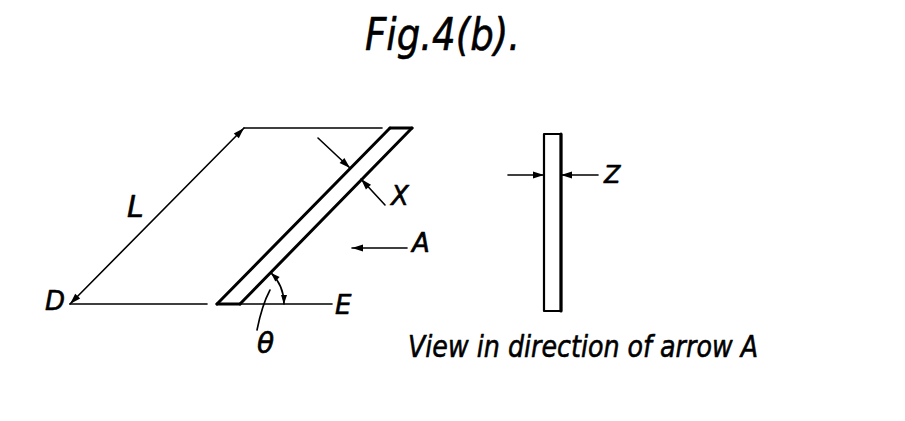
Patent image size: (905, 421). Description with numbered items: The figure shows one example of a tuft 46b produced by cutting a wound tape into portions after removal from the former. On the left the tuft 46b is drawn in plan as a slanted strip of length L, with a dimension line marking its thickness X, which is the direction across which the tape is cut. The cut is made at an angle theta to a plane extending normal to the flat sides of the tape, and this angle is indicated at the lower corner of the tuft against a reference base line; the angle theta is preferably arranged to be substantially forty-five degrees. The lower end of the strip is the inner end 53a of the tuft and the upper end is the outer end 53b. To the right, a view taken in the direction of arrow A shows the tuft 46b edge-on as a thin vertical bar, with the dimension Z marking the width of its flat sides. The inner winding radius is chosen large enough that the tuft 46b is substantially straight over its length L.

The tuft 46b is at (310, 209).
The inner end 53a is at (223, 307).
The outer end 53b is at (407, 130).